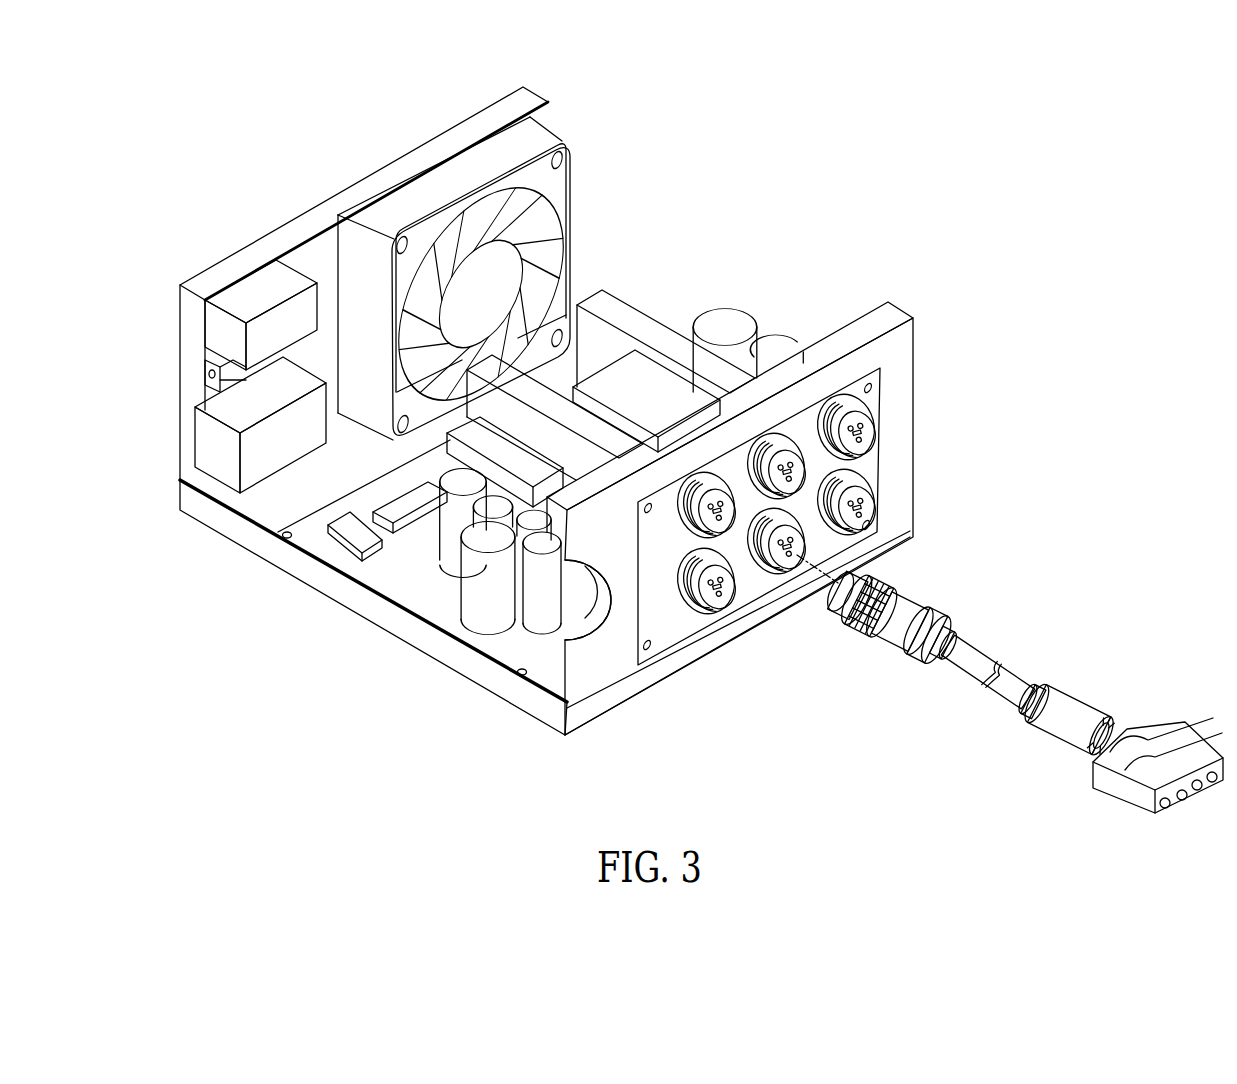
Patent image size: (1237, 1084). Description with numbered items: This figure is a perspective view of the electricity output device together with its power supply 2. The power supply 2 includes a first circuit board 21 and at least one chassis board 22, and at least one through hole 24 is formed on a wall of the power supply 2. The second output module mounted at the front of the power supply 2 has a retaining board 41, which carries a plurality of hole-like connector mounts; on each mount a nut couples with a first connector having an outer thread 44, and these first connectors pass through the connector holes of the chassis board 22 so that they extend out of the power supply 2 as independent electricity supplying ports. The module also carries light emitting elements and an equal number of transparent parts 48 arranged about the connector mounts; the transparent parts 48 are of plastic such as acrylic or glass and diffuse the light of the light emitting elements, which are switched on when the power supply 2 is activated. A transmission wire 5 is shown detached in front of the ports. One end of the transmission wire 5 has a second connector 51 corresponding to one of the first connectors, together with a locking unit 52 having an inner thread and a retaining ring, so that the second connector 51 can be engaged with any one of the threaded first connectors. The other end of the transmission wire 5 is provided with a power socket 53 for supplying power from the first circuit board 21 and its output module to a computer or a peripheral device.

The power supply 2 is at (318, 213).
The first circuit board 21 is at (387, 570).
The chassis board 22 is at (593, 693).
The through hole 24 is at (577, 627).
The retaining board 41 is at (868, 460).
The outer thread 44 is at (842, 403).
The transparent part 48 is at (690, 610).
The transmission wire 5 is at (957, 657).
The second connector 51 is at (845, 600).
The locking unit 52 is at (905, 582).
The power socket 53 is at (1155, 735).